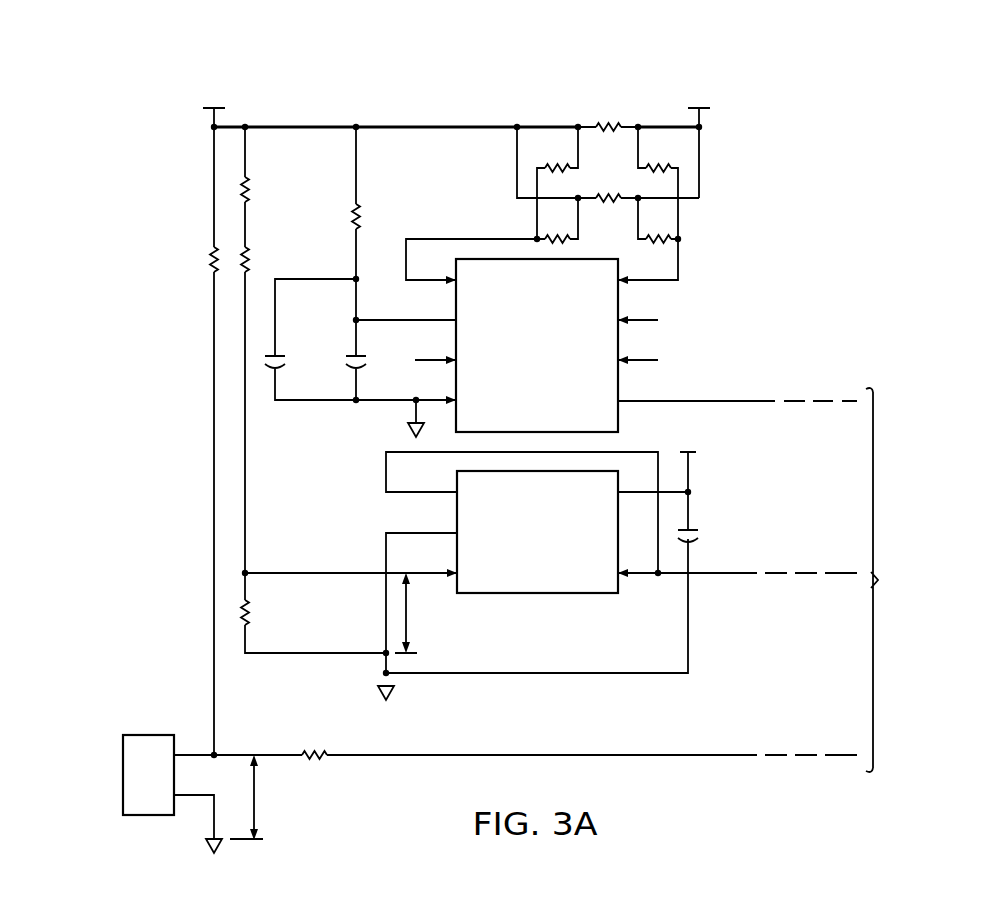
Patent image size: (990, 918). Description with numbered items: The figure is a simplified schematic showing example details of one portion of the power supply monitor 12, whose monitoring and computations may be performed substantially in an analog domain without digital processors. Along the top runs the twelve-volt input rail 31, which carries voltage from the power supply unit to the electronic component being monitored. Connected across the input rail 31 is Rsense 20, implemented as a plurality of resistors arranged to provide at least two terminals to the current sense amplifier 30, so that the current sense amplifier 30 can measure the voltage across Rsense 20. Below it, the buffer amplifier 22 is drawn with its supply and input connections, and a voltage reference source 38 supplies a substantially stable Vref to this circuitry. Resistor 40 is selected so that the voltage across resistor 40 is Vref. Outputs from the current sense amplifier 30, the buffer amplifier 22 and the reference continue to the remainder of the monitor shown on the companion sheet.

The power supply monitor 12 is at (912, 194).
The Rsense 20 is at (706, 218).
The buffer amplifier 22 is at (523, 549).
The current sense amplifier 30 is at (523, 355).
The 12V input rail 31 is at (415, 127).
The voltage reference source 38 is at (146, 735).
The resistor 40 is at (249, 615).